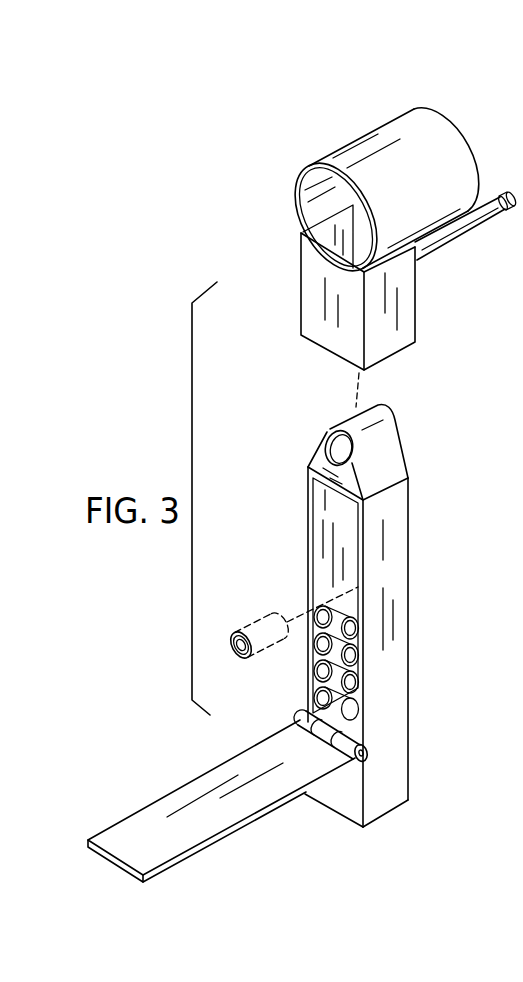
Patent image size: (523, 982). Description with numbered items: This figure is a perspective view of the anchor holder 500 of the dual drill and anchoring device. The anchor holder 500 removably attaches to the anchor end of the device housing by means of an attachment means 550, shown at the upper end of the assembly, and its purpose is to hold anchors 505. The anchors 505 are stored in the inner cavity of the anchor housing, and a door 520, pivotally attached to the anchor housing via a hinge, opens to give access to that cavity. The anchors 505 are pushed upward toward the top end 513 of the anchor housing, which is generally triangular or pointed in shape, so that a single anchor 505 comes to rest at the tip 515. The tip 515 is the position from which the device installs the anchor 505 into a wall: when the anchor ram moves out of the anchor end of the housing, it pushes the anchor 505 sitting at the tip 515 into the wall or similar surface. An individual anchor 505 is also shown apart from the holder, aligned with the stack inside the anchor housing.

The anchor holder 500 is at (262, 278).
The attachment means 550 is at (414, 158).
The top end of the anchor housing 513 is at (368, 427).
The tip 515 is at (333, 447).
The anchor 505 is at (258, 630).
The door 520 is at (242, 822).